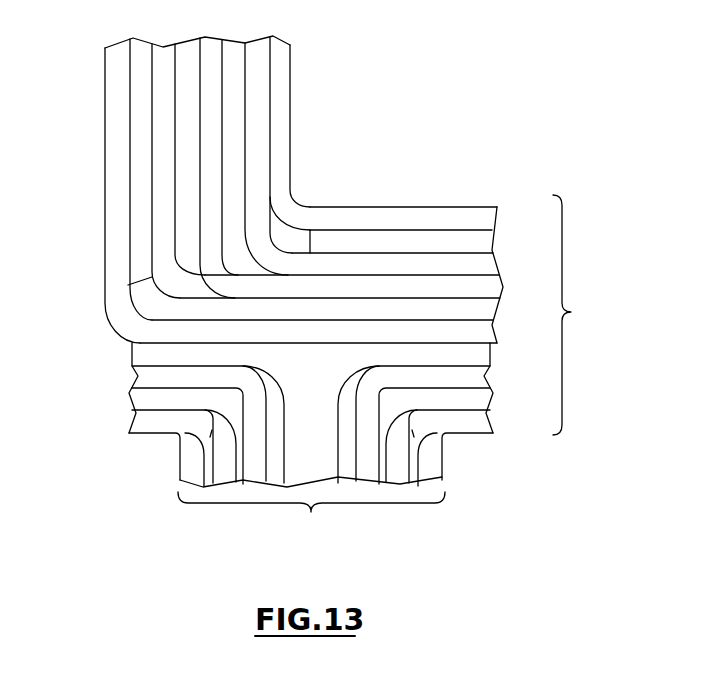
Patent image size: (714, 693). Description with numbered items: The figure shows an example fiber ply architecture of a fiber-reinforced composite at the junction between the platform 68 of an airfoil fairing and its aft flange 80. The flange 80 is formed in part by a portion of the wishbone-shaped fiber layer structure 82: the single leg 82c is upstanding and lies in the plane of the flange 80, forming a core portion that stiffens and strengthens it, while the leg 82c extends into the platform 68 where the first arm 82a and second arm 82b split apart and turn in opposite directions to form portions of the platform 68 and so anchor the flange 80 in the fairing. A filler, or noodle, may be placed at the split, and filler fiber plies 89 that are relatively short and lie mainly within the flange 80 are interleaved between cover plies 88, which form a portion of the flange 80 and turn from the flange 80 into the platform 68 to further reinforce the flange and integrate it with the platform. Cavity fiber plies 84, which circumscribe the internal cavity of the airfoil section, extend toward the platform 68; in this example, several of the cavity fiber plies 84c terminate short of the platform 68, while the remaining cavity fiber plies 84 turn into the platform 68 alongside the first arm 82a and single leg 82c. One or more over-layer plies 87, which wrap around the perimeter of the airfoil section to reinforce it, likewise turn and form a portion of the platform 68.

The platform 68 is at (571, 312).
The flange 80 is at (312, 512).
The wishbone-shaped fiber layer structure 82 is at (336, 360).
The first arm 82a is at (190, 358).
The second arm 82b is at (440, 356).
The single leg 82c is at (317, 447).
The cavity fiber plies 84 is at (200, 108).
The cavity fiber plies terminating short of the platform 84c is at (187, 227).
The over-layer plies 87 is at (200, 133).
The cover plies 88 is at (417, 400).
The filler fiber plies 89 is at (238, 440).